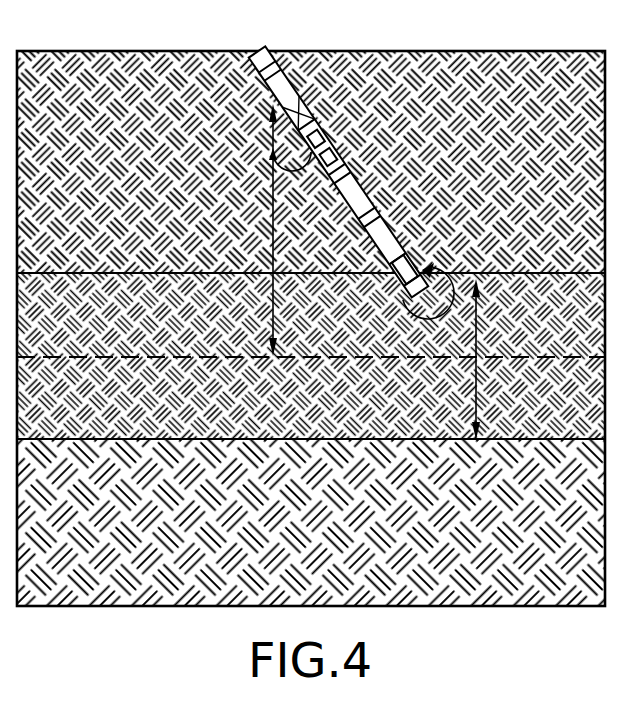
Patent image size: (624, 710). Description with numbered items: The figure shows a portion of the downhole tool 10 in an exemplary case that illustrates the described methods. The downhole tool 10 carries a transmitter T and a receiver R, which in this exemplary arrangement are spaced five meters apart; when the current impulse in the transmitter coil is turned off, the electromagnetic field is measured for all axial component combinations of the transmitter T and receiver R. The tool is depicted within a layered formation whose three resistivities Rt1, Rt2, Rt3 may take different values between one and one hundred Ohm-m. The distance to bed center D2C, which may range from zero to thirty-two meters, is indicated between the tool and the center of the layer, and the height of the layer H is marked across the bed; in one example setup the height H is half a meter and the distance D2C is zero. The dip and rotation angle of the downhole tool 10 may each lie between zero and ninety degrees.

The downhole tool 10 is at (360, 114).
The first resistivity Rt1 is at (311, 162).
The second resistivity Rt2 is at (311, 356).
The third resistivity Rt3 is at (311, 522).
The distance to bed center D2C is at (247, 230).
The height of the layer H is at (497, 359).
The transmitter T is at (316, 93).
The receiver R is at (407, 220).